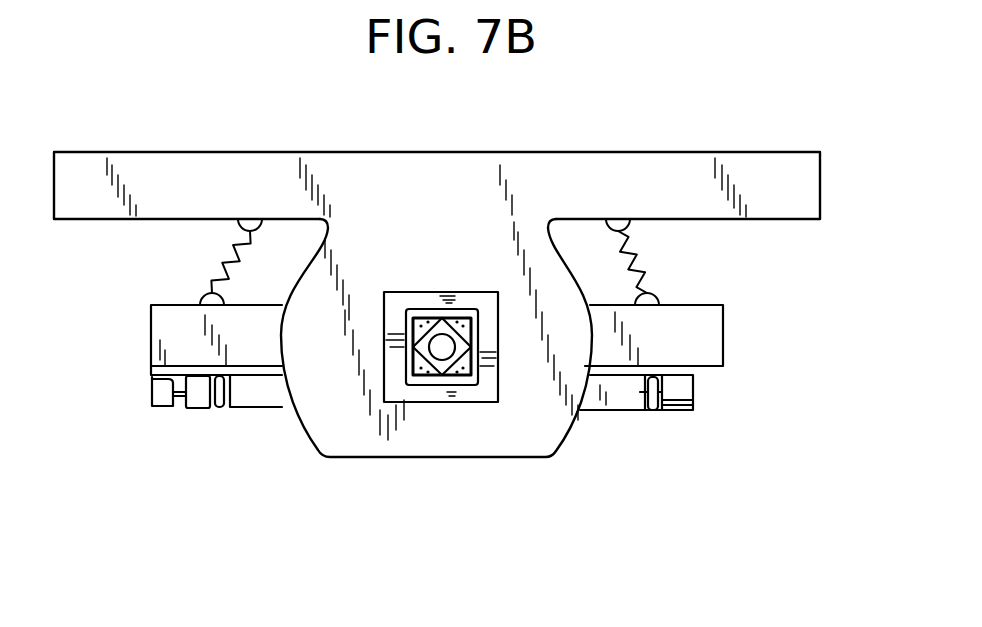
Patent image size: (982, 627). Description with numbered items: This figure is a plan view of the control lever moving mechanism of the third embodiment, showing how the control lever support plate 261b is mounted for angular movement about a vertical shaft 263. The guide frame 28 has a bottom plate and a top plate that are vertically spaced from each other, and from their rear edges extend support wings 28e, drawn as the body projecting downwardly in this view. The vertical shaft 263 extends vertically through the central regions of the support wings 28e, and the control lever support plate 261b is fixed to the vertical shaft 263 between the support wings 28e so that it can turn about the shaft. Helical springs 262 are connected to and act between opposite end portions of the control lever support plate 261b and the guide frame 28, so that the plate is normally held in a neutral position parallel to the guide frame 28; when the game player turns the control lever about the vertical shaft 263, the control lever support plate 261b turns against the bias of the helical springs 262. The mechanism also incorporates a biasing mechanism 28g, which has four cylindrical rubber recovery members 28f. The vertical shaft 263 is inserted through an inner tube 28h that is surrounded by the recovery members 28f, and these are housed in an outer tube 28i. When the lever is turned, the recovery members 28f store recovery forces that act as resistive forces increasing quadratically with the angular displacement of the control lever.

The guide frame 28 is at (683, 172).
The support wings 28e is at (318, 414).
The cylindrical rubber recovery members 28f is at (423, 370).
The biasing mechanism 28g is at (494, 373).
The inner tube 28h is at (442, 386).
The outer tube 28i is at (476, 383).
The control lever support plate 261b is at (185, 320).
The helical springs 262 is at (227, 245).
The vertical shaft 263 is at (443, 352).